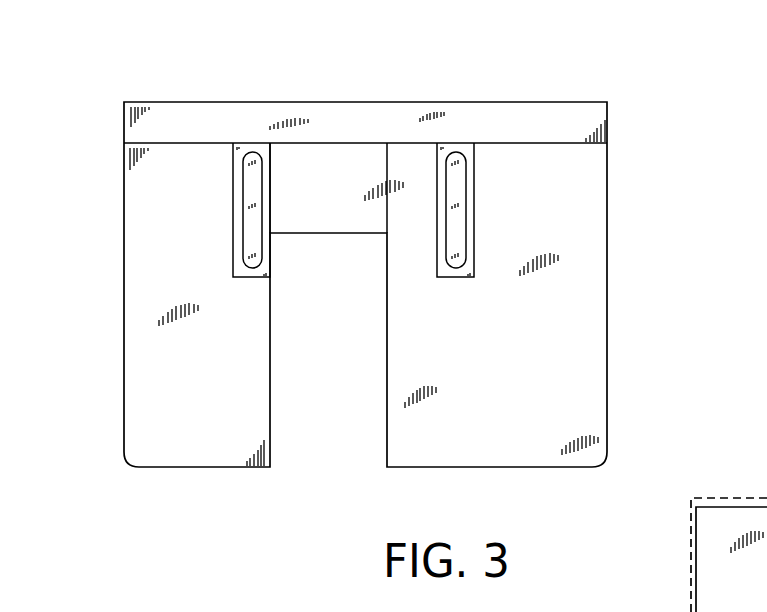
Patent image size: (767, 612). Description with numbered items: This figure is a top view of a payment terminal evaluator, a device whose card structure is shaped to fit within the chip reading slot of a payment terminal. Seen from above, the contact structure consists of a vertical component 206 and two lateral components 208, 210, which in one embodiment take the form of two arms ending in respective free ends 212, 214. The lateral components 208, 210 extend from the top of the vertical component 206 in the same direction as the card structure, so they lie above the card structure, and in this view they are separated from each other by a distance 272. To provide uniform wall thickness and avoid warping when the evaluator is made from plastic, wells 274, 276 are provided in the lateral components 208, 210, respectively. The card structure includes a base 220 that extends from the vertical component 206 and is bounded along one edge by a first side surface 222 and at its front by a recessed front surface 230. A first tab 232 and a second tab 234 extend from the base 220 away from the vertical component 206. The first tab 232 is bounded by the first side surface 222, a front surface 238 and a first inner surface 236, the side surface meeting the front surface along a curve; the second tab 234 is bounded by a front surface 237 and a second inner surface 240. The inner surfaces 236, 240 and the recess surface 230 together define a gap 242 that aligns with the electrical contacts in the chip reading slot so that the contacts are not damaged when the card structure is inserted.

The vertical component 206 is at (338, 118).
The lateral component 208 is at (472, 236).
The lateral component 210 is at (241, 245).
The free end 212 is at (455, 277).
The free end 214 is at (247, 277).
The base 220 is at (580, 166).
The first side surface 222 is at (607, 235).
The recessed front surface 230 is at (340, 234).
The first tab 232 is at (490, 440).
The second tab 234 is at (187, 413).
The first inner surface 236 is at (387, 417).
The front surface 237 is at (150, 468).
The front surface 238 is at (575, 468).
The second inner surface 240 is at (271, 378).
The gap 242 is at (331, 463).
The distance 272 is at (378, 162).
The well 274 is at (455, 190).
The well 276 is at (253, 190).